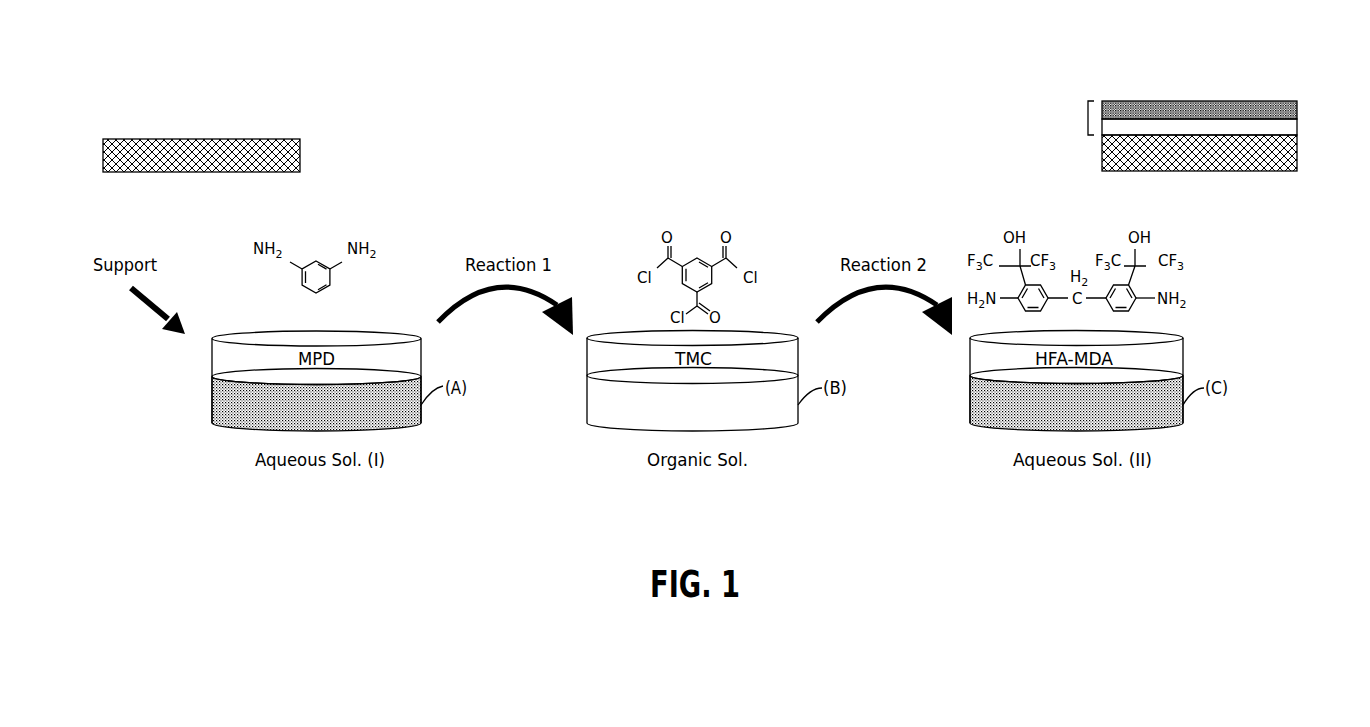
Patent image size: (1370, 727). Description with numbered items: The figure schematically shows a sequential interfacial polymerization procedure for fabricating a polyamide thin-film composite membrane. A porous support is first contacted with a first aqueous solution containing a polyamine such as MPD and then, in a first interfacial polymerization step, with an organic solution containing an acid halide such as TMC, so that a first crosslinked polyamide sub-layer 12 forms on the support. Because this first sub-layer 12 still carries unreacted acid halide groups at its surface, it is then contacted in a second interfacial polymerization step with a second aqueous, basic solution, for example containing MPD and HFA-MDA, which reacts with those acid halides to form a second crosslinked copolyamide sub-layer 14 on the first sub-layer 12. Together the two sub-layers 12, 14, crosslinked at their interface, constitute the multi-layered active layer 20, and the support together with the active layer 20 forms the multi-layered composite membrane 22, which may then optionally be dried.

The first sub-layer 12 is at (1298, 128).
The second crosslinked layer 14 is at (1298, 110).
The active layer 20 is at (1085, 118).
The multi-layered composite membrane 22 is at (1232, 82).